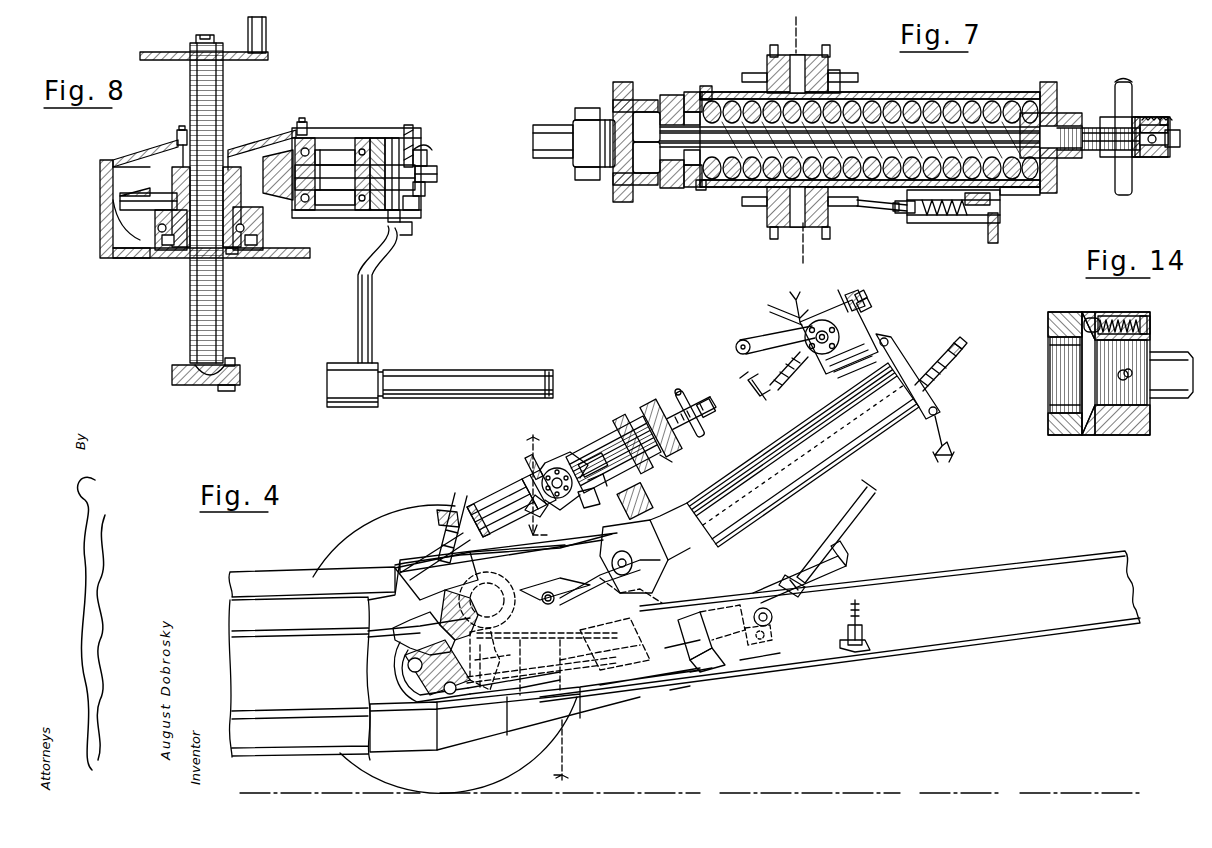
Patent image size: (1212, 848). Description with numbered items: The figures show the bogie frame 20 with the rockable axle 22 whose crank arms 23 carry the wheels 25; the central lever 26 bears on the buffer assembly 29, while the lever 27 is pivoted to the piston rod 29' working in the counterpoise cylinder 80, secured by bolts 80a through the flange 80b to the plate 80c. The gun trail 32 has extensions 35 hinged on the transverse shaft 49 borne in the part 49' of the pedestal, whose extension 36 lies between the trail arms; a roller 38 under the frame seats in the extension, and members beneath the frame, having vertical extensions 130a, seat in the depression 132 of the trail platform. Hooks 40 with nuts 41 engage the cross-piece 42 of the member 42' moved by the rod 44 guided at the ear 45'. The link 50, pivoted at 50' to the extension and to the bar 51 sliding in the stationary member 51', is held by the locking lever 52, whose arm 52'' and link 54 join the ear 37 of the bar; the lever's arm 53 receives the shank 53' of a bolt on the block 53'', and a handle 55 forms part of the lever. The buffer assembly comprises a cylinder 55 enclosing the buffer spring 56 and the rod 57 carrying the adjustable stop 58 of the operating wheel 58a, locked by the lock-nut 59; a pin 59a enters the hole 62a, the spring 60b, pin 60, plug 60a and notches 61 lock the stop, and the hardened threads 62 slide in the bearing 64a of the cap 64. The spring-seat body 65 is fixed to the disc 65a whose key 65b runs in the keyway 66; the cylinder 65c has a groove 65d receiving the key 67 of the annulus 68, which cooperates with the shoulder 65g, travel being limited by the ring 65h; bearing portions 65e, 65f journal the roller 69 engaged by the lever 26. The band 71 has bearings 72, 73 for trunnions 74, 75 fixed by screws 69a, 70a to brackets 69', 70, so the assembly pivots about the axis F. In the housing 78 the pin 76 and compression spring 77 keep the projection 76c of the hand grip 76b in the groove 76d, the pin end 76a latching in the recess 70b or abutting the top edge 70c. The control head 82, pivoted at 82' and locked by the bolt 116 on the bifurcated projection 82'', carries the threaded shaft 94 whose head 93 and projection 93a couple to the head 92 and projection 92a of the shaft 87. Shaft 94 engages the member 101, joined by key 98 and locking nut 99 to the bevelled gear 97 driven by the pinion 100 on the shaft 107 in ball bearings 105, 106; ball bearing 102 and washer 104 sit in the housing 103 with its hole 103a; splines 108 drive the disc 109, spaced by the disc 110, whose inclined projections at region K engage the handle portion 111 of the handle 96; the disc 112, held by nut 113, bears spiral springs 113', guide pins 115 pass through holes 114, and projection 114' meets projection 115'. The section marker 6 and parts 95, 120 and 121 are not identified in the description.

In FIG. 4, the section line 6 is at (547, 609).
In FIG. 4, the frame 20 is at (545, 552).
In FIG. 4, the axle 22 is at (500, 592).
In FIG. 4, the crank arm 23 is at (437, 667).
In FIG. 4, the wheels 25 is at (365, 540).
In FIG. 7, the lever 26 is at (533, 143).
In FIG. 4, the lever 26 is at (480, 556).
In FIG. 4, the lever 27 is at (555, 592).
In FIG. 7, the buffer assembly 29 is at (870, 128).
In FIG. 4, the buffer assembly 29 is at (612, 454).
In FIG. 4, the piston rod 29' is at (610, 582).
In FIG. 4, the gun trail 32 is at (988, 575).
In FIG. 4, the extensions 35 is at (372, 640).
In FIG. 4, the pedestal extension 36 is at (527, 720).
In FIG. 4, the ear 37 is at (707, 660).
In FIG. 4, the roller 38 is at (615, 644).
In FIG. 4, the hooks 40 is at (400, 628).
In FIG. 4, the nuts 41 is at (455, 520).
In FIG. 4, the cross-piece 42 is at (459, 612).
In FIG. 4, the rockable member 42' is at (468, 691).
In FIG. 4, the rod 44 is at (553, 664).
In FIG. 4, the ear 45' is at (703, 682).
In FIG. 4, the transverse shaft 49 is at (421, 672).
In FIG. 4, the pedestal part 49' is at (300, 663).
In FIG. 4, the link 50 is at (688, 634).
In FIG. 4, the pivot 50' is at (661, 691).
In FIG. 4, the bar 51 is at (722, 622).
In FIG. 4, the stationary member 51' is at (760, 671).
In FIG. 4, the locking lever 52 is at (799, 579).
In FIG. 4, the arm 52'' is at (782, 621).
In FIG. 4, the arm 53 is at (848, 560).
In FIG. 4, the bolt shank 53' is at (867, 622).
In FIG. 4, the block 53'' is at (864, 656).
In FIG. 4, the link 54 is at (765, 642).
In FIG. 7, the buffer cylinder; handle of locking lever 55 is at (922, 100).
In FIG. 4, the buffer cylinder; handle of locking lever 55 is at (598, 443).
In FIG. 7, the buffer spring 56 is at (958, 100).
In FIG. 7, the reciprocable rod 57 is at (912, 135).
In FIG. 14, the reciprocable rod 57 is at (1050, 365).
In FIG. 4, the reciprocable rod 57 is at (688, 413).
In FIG. 7, the adjustable stop 58 is at (1110, 157).
In FIG. 4, the adjustable stop 58 is at (686, 432).
In FIG. 7, the operating wheel 58a is at (1126, 80).
In FIG. 14, the operating wheel 58a is at (1056, 435).
In FIG. 4, the operating wheel 58a is at (680, 391).
In FIG. 7, the lock-nut 59 is at (1152, 157).
In FIG. 14, the lock-nut 59 is at (1120, 435).
In FIG. 4, the lock-nut 59 is at (711, 413).
In FIG. 7, the pin 59a is at (1160, 145).
In FIG. 14, the pin 59a is at (1125, 375).
In FIG. 7, the pin 60 is at (1150, 117).
In FIG. 14, the pin 60 is at (1100, 318).
In FIG. 7, the removable plug 60a is at (1168, 122).
In FIG. 14, the removable plug 60a is at (1150, 325).
In FIG. 7, the spring 60b is at (1174, 110).
In FIG. 14, the spring 60b is at (1145, 316).
In FIG. 7, the notches 61 is at (1136, 117).
In FIG. 14, the notches 61 is at (1083, 315).
In FIG. 7, the hardened threads 62 is at (1088, 150).
In FIG. 7, the hole 62a is at (1176, 138).
In FIG. 14, the hole 62a is at (1133, 375).
In FIG. 7, the cylinder cap 64 is at (1048, 82).
In FIG. 4, the cylinder cap 64 is at (658, 405).
In FIG. 7, the bearing sleeve 64a is at (1075, 109).
In FIG. 7, the spring-seat body 65 is at (665, 156).
In FIG. 4, the spring-seat body 65 is at (500, 506).
In FIG. 7, the disc 65a is at (706, 86).
In FIG. 7, the key 65b is at (712, 127).
In FIG. 7, the cylinder 65c is at (640, 100).
In FIG. 7, the groove 65d is at (646, 185).
In FIG. 7, the bearing portion 65e is at (575, 113).
In FIG. 7, the bearing portion 65f is at (575, 173).
In FIG. 4, the bearing portion 65f is at (437, 519).
In FIG. 7, the shoulder 65g is at (705, 190).
In FIG. 7, the ring 65h is at (630, 84).
In FIG. 7, the keyway 66 is at (665, 127).
In FIG. 7, the key 67 is at (668, 190).
In FIG. 7, the annulus 68 is at (693, 188).
In FIG. 4, the annulus 68 is at (520, 480).
In FIG. 7, the roller 69 is at (594, 143).
In FIG. 4, the roller 69 is at (436, 566).
In FIG. 7, the bracket 69' is at (850, 76).
In FIG. 7, the screws 69a is at (830, 50).
In FIG. 7, the bracket 70 is at (866, 208).
In FIG. 4, the bracket 70 is at (550, 460).
In FIG. 7, the screws 70a is at (770, 232).
In FIG. 4, the screws 70a is at (535, 499).
In FIG. 4, the recess 70b is at (600, 489).
In FIG. 4, the top edge 70c is at (591, 483).
In FIG. 7, the band 71 is at (836, 82).
In FIG. 4, the band 71 is at (528, 462).
In FIG. 7, the bearing 72 is at (767, 86).
In FIG. 7, the bearing 73 is at (767, 200).
In FIG. 7, the trunnion 74 is at (808, 60).
In FIG. 7, the trunnion 75 is at (793, 227).
In FIG. 4, the trunnion 75 is at (553, 497).
In FIG. 7, the pin 76 is at (970, 223).
In FIG. 7, the pin end 76a is at (895, 213).
In FIG. 4, the pin end 76a is at (593, 465).
In FIG. 7, the hand grip 76b is at (998, 234).
In FIG. 4, the hand grip 76b is at (631, 424).
In FIG. 7, the projection 76c is at (990, 200).
In FIG. 7, the groove 76d is at (1035, 195).
In FIG. 4, the groove 76d is at (677, 464).
In FIG. 7, the compression spring 77 is at (942, 223).
In FIG. 7, the cylindrical housing 78 is at (910, 223).
In FIG. 4, the counterpoise cylinder 80 is at (803, 455).
In FIG. 4, the bolts 80a is at (668, 560).
In FIG. 4, the flange 80b is at (650, 518).
In FIG. 4, the plate 80c is at (634, 556).
In FIG. 8, the control head 82 is at (191, 194).
In FIG. 4, the control head 82 is at (788, 314).
In FIG. 4, the pivot 82' is at (908, 374).
In FIG. 4, the bifurcated projection 82'' is at (791, 298).
In FIG. 4, the shaft 87 is at (932, 378).
In FIG. 4, the head 92 is at (958, 354).
In FIG. 4, the projection 92a is at (972, 345).
In FIG. 8, the head 93 is at (240, 378).
In FIG. 4, the head 93 is at (870, 305).
In FIG. 8, the projection 93a is at (232, 391).
In FIG. 4, the projection 93a is at (866, 295).
In FIG. 8, the threaded shaft 94 is at (222, 320).
In FIG. 4, the threaded shaft 94 is at (785, 372).
In FIG. 8, the bracket 95 is at (266, 45).
In FIG. 4, the bracket 95 is at (755, 387).
In FIG. 8, the operating handle 96 is at (428, 372).
In FIG. 4, the operating handle 96 is at (740, 343).
In FIG. 8, the bevelled gear 97 is at (130, 193).
In FIG. 8, the key 98 is at (241, 178).
In FIG. 8, the locking nut 99 is at (172, 172).
In FIG. 8, the pinion 100 is at (278, 172).
In FIG. 8, the rotatable member 101 is at (178, 250).
In FIG. 8, the ball bearing 102 is at (263, 230).
In FIG. 8, the housing 103 is at (125, 258).
In FIG. 4, the housing 103 is at (862, 330).
In FIG. 8, the hole 103a is at (177, 136).
In FIG. 8, the washer 104 is at (140, 208).
In FIG. 8, the ball bearing 105 is at (307, 130).
In FIG. 8, the ball bearing 106 is at (362, 138).
In FIG. 8, the short shaft 107 is at (356, 173).
In FIG. 8, the splines 108 is at (355, 186).
In FIG. 8, the disc 109 is at (378, 138).
In FIG. 8, the second disc 110 is at (388, 216).
In FIG. 8, the upper handle portion 111 is at (425, 196).
In FIG. 8, the disc 112 is at (427, 160).
In FIG. 8, the nut 113 is at (441, 178).
In FIG. 4, the nut 113 is at (821, 352).
In FIG. 8, the spiral springs 113' is at (423, 141).
In FIG. 8, the holes 114 is at (427, 214).
In FIG. 8, the projection 114' is at (242, 352).
In FIG. 4, the projection 114' is at (860, 287).
In FIG. 8, the guide pins 115 is at (414, 237).
In FIG. 4, the guide pins 115 is at (838, 291).
In FIG. 8, the projection 115' is at (245, 264).
In FIG. 4, the bolt 116 is at (948, 444).
In FIG. 4, the pin 120 is at (632, 501).
In FIG. 4, the plate 121 is at (403, 727).
In FIG. 4, the vertical extensions 130a is at (528, 638).
In FIG. 4, the depression 132 is at (491, 659).
In FIG. 7, the axis F is at (798, 139).
In FIG. 8, the region K is at (392, 138).